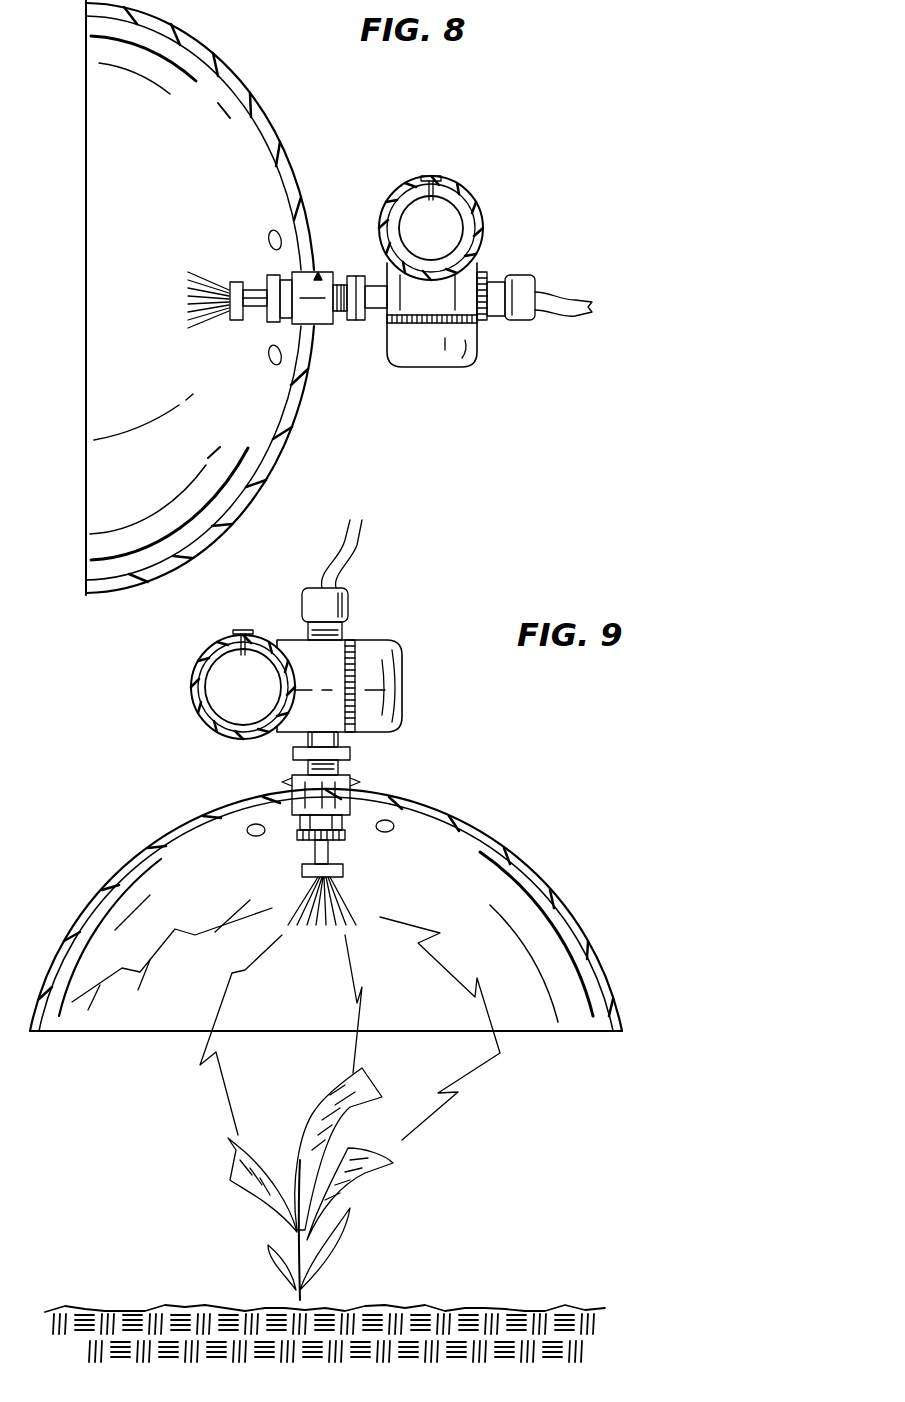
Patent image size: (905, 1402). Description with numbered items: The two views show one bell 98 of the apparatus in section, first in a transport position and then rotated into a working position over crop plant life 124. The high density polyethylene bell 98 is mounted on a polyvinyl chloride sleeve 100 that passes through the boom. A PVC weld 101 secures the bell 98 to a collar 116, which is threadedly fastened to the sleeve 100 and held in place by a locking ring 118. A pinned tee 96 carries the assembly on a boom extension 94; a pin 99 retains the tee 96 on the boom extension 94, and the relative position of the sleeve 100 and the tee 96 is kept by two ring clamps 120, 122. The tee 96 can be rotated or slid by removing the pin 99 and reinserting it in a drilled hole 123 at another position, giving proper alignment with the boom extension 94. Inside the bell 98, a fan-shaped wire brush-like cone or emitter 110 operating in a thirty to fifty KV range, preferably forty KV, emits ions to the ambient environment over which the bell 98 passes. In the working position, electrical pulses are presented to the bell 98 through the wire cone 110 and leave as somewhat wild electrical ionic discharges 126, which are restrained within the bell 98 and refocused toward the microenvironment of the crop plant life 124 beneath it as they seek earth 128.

In FIG. 8, the boom extension 94 is at (465, 224).
In FIG. 9, the boom extension 94 is at (208, 733).
In FIG. 8, the tee 96 is at (478, 203).
In FIG. 9, the tee 96 is at (262, 742).
In FIG. 8, the bell 98 is at (283, 147).
In FIG. 8, the pin 99 is at (431, 176).
In FIG. 9, the pin 99 is at (243, 630).
In FIG. 8, the sleeve 100 is at (360, 320).
In FIG. 9, the sleeve 100 is at (340, 745).
In FIG. 8, the PVC weld 101 is at (318, 272).
In FIG. 9, the emitter 110 is at (348, 915).
In FIG. 8, the collar 116 is at (316, 280).
In FIG. 8, the locking ring 118 is at (322, 326).
In FIG. 8, the ring clamp 120 is at (266, 305).
In FIG. 8, the ring clamp 122 is at (490, 272).
In FIG. 8, the drilled hole 123 is at (484, 237).
In FIG. 9, the drilled hole 123 is at (197, 672).
In FIG. 9, the crop plant life 124 is at (362, 1175).
In FIG. 9, the electrical ionic discharges 126 is at (462, 1080).
In FIG. 9, the earth 128 is at (328, 1335).